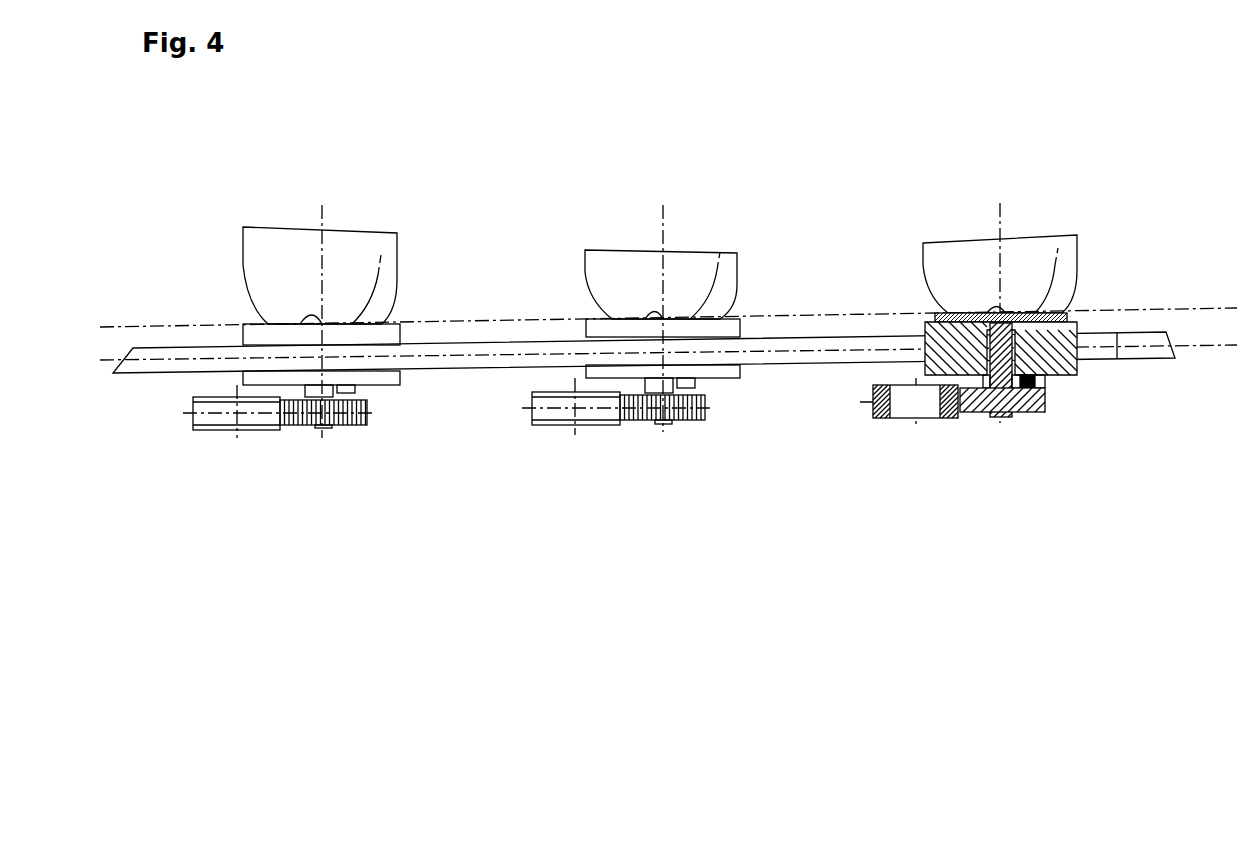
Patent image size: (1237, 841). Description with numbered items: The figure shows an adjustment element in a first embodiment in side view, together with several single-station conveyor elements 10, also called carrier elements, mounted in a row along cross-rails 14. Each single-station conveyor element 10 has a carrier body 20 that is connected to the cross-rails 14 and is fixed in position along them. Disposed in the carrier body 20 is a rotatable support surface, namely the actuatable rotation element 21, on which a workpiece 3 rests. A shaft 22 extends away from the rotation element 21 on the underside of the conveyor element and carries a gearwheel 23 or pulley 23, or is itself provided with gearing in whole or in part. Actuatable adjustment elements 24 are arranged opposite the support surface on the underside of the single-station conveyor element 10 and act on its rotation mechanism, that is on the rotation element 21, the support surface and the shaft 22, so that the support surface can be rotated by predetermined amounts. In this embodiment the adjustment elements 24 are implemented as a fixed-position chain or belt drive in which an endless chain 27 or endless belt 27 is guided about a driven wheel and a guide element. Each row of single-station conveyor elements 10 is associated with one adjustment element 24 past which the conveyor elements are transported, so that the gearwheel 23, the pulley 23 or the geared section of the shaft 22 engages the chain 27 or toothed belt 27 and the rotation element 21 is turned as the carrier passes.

The cup-shaped body 3 is at (630, 277).
The single-station conveyor element 10 is at (588, 320).
The cross-rail 14 is at (137, 368).
The carrier body 20 is at (275, 378).
The rotation element 21 is at (248, 332).
The shaft 22 is at (1030, 383).
The gearwheel 23 is at (357, 422).
The adjustment element 24 is at (260, 433).
The endless chain 27 is at (876, 408).